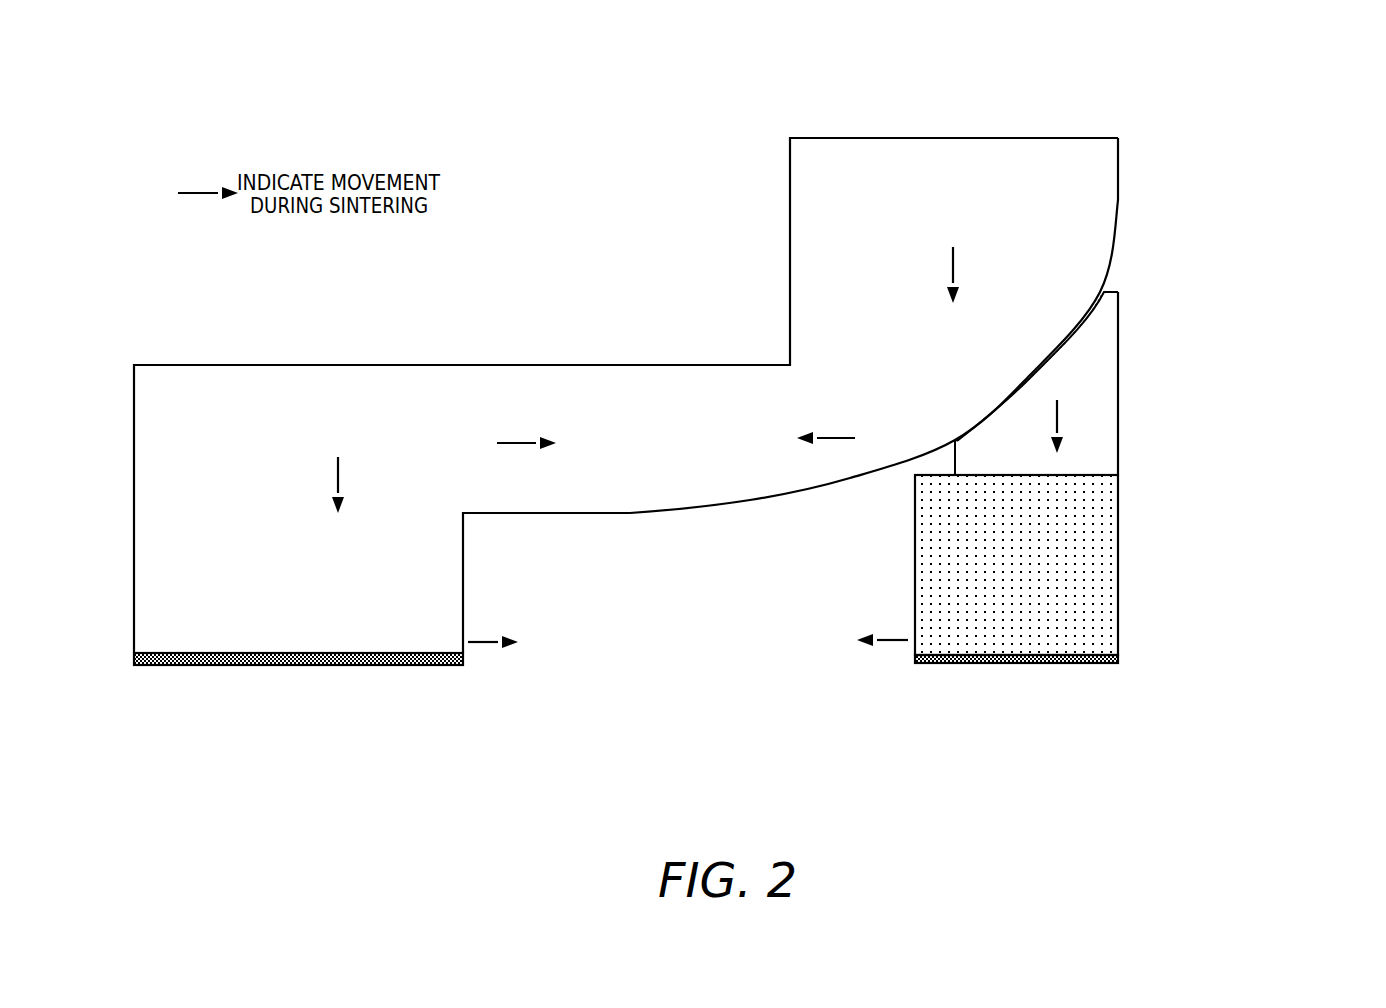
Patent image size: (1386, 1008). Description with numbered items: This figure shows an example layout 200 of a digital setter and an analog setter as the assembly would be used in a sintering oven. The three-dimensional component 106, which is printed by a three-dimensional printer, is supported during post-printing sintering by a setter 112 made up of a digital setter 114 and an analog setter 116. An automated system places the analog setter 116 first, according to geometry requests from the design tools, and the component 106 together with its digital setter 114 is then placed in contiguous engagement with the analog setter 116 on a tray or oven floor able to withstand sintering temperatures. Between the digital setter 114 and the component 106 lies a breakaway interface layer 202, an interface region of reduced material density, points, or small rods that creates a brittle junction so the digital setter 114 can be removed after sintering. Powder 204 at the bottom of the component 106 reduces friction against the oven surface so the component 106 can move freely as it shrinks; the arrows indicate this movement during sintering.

The layout 200 is at (1012, 58).
The 3D component 106 is at (1128, 192).
The breakaway interface layer 202 is at (1118, 281).
The digital setter 114 is at (1130, 438).
The setter 112 is at (1242, 458).
The analog setter 116 is at (1132, 597).
The powder 204 is at (455, 674).